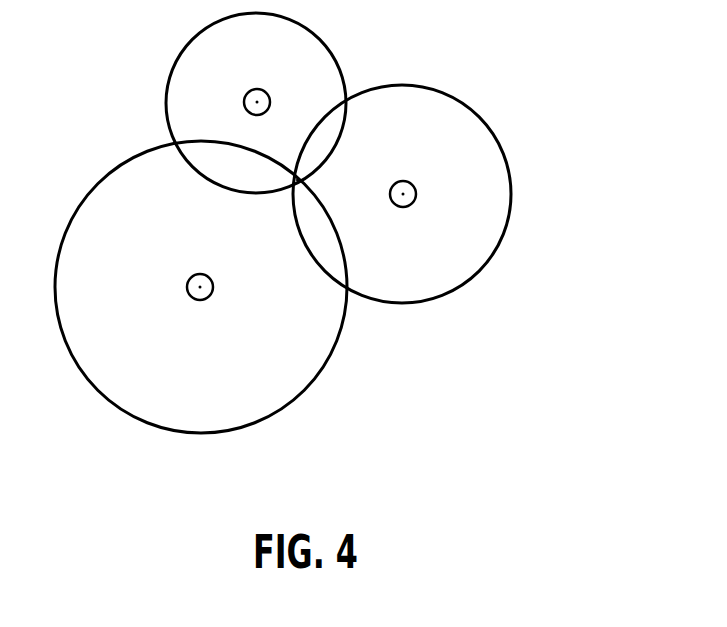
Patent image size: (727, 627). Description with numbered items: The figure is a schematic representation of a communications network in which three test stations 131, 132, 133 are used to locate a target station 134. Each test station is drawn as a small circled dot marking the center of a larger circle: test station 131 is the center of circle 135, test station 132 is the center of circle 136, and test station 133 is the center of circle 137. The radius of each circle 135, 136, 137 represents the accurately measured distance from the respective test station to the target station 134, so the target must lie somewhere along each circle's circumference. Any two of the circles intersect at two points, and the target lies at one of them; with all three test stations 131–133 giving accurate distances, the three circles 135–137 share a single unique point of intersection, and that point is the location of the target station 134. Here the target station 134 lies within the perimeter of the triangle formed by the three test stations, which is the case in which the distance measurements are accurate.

The test station 131 is at (210, 298).
The test station 132 is at (414, 185).
The test station 133 is at (267, 91).
The target station 134 is at (295, 185).
The circle 135 is at (307, 385).
The circle 136 is at (497, 133).
The circle 137 is at (323, 40).